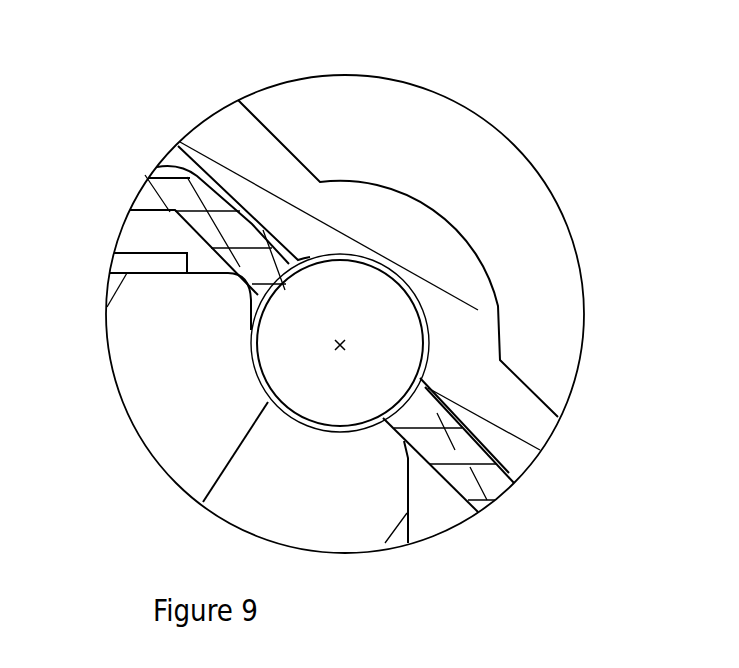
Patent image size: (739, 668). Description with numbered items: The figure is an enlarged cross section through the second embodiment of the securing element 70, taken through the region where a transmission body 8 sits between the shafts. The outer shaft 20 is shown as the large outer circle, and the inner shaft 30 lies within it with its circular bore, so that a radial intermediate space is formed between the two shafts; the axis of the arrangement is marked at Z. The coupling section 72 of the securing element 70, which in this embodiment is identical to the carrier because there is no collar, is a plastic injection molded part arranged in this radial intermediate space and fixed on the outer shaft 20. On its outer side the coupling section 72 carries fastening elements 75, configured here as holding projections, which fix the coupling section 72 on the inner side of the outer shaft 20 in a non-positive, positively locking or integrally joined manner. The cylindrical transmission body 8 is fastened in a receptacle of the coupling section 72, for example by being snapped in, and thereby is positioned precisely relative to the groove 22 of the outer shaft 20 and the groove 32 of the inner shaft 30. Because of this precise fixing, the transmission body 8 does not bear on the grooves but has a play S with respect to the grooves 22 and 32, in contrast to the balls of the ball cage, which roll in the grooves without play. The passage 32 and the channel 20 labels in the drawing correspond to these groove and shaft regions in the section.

The transmission body 8 is at (342, 317).
The outer shaft 20 is at (277, 173).
The groove 22 is at (393, 263).
The inner shaft 30 is at (187, 365).
The groove 32 is at (277, 415).
The securing element 70 is at (145, 175).
The coupling section 72 is at (473, 488).
The fastening element 75 is at (237, 192).
The play S is at (410, 283).
The axis Z is at (334, 344).